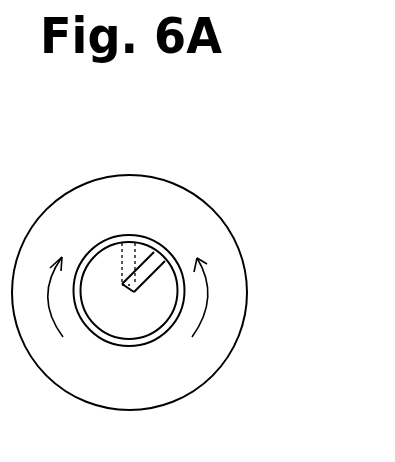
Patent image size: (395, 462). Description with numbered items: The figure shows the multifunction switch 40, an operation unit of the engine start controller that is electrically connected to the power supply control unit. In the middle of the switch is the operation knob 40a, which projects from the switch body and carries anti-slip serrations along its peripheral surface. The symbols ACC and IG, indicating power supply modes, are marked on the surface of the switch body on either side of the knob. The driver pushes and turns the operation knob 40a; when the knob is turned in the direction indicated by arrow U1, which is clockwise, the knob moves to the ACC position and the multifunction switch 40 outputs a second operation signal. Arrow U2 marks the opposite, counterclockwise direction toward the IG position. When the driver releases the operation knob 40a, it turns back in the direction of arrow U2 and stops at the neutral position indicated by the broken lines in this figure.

The multifunction switch 40 is at (199, 155).
The operation knob 40a is at (140, 323).
The ACC position ACC is at (172, 260).
The IG position IG is at (91, 257).
The arrow U1 is at (67, 310).
The arrow U2 is at (190, 311).